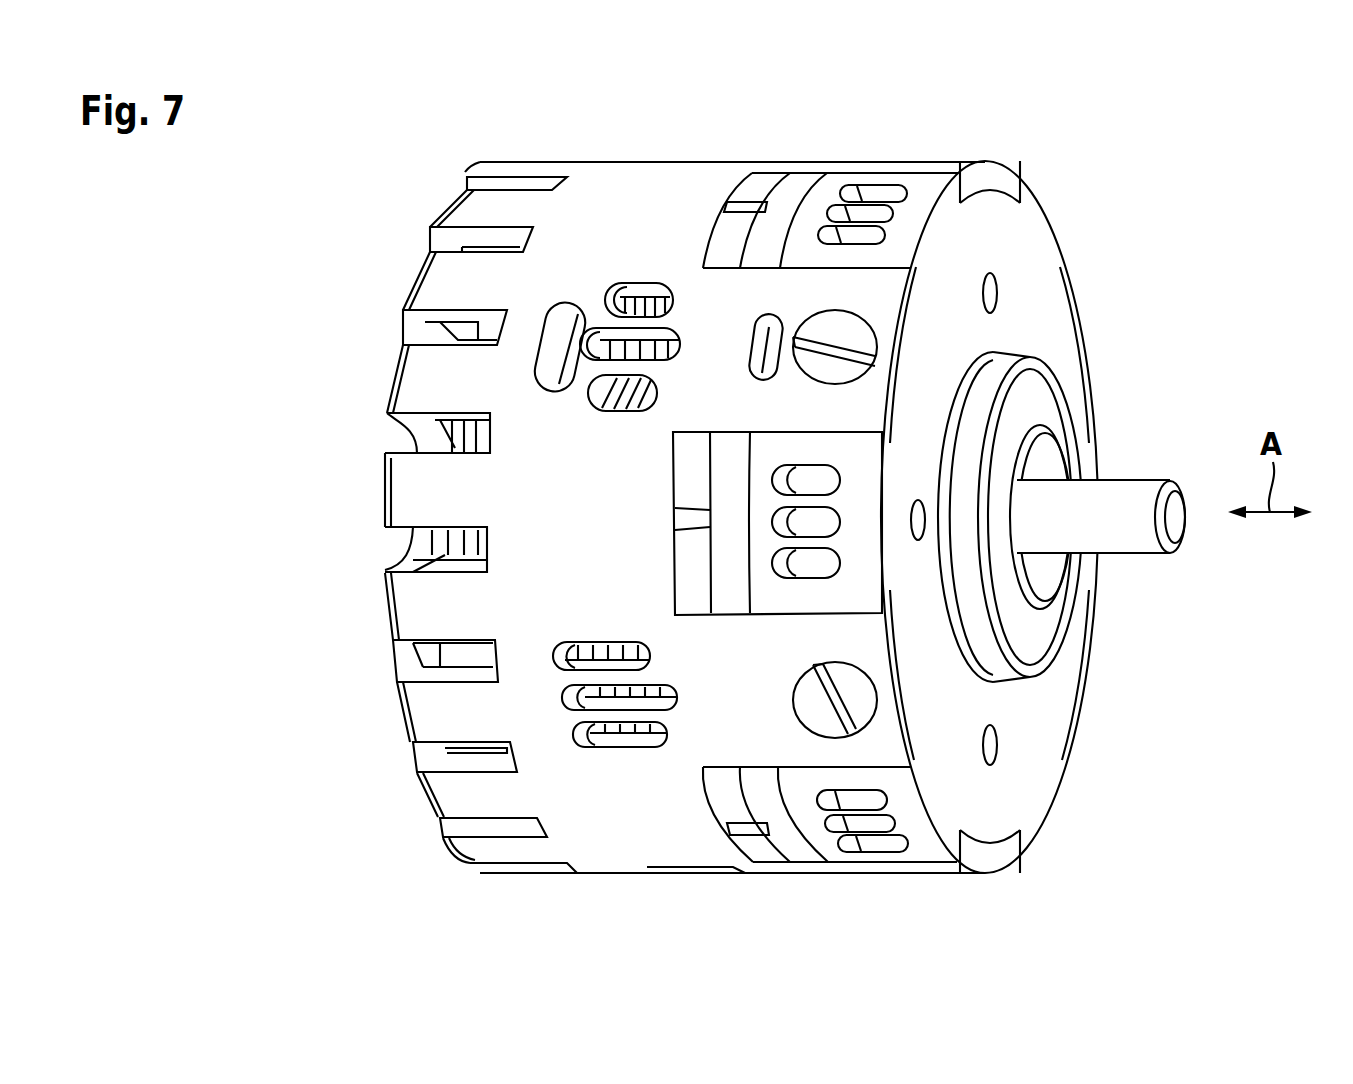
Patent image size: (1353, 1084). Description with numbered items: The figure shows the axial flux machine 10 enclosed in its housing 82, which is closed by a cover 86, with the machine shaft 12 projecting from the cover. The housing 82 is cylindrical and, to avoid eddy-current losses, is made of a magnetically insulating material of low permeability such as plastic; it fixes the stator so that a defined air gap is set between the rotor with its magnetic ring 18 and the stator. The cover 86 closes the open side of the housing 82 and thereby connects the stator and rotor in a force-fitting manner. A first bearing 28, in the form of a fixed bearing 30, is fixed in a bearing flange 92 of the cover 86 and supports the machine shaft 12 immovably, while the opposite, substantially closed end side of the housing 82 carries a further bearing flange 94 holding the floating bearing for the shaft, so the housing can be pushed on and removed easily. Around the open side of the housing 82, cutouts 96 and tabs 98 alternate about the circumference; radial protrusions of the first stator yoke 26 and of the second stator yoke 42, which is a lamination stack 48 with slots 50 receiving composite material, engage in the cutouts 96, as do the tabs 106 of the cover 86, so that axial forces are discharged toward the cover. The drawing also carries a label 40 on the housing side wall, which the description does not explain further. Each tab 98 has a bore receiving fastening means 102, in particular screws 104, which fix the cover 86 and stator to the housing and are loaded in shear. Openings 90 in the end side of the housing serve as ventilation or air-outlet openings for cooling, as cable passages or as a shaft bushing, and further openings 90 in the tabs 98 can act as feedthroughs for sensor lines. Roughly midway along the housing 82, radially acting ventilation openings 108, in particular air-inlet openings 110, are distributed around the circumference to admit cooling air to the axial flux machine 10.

The axial flux machine 10 is at (1220, 167).
The machine shaft 12 is at (1152, 492).
The magnetic ring 18 is at (581, 337).
The first stator yoke 26 is at (805, 200).
The first bearing 28 is at (1045, 465).
The fixed bearing 30 is at (1112, 482).
The housing recess 40 is at (437, 655).
The second stator yoke 42 is at (760, 205).
The lamination stack 48 is at (746, 181).
The slots 50 is at (745, 830).
The housing 82 is at (675, 193).
The cover 86 is at (1035, 228).
The openings 90 is at (637, 385).
The bearing flange 92 is at (1050, 393).
The further bearing flange 94 is at (395, 437).
The cutouts 96 is at (836, 858).
The tabs 98 is at (893, 755).
The fastening means 102 is at (847, 323).
The screws 104 is at (858, 697).
The tabs 106 is at (932, 192).
The radially acting ventilation openings 108 is at (892, 498).
The air-inlet openings 110 is at (957, 498).